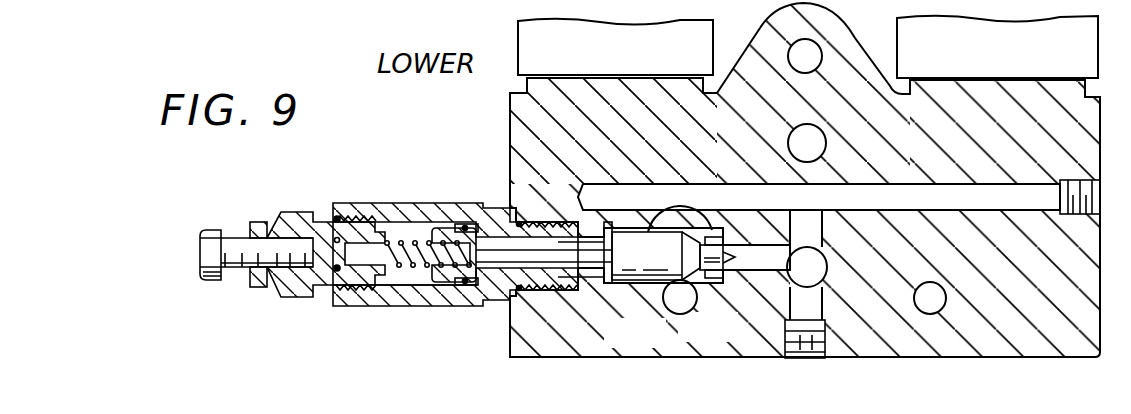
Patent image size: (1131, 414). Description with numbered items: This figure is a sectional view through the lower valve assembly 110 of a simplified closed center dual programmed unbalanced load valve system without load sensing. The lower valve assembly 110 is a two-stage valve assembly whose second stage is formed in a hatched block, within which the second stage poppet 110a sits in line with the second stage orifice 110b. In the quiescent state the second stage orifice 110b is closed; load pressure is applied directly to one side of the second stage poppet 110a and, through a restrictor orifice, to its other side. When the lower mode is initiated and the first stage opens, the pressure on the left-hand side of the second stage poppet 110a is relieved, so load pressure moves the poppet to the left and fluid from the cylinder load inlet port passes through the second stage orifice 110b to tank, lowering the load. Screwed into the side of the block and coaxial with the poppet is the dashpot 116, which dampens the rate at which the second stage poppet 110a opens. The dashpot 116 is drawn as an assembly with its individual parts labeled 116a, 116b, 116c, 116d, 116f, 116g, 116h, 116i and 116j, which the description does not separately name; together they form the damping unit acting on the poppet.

The lower valve assembly 110 is at (437, 116).
The second stage poppet 110a is at (652, 266).
The second stage orifice 110b is at (716, 270).
The dashpot 116 is at (417, 205).
The valve housing 116a is at (376, 303).
The piston 116b is at (447, 229).
The spring 116c is at (406, 243).
The seal seat 116d is at (463, 226).
The valve stem bore 116f is at (419, 283).
The adjusting plug 116g is at (345, 296).
The O-ring 116h is at (336, 215).
The adjusting screw 116i is at (207, 246).
The lock nut 116j is at (258, 289).